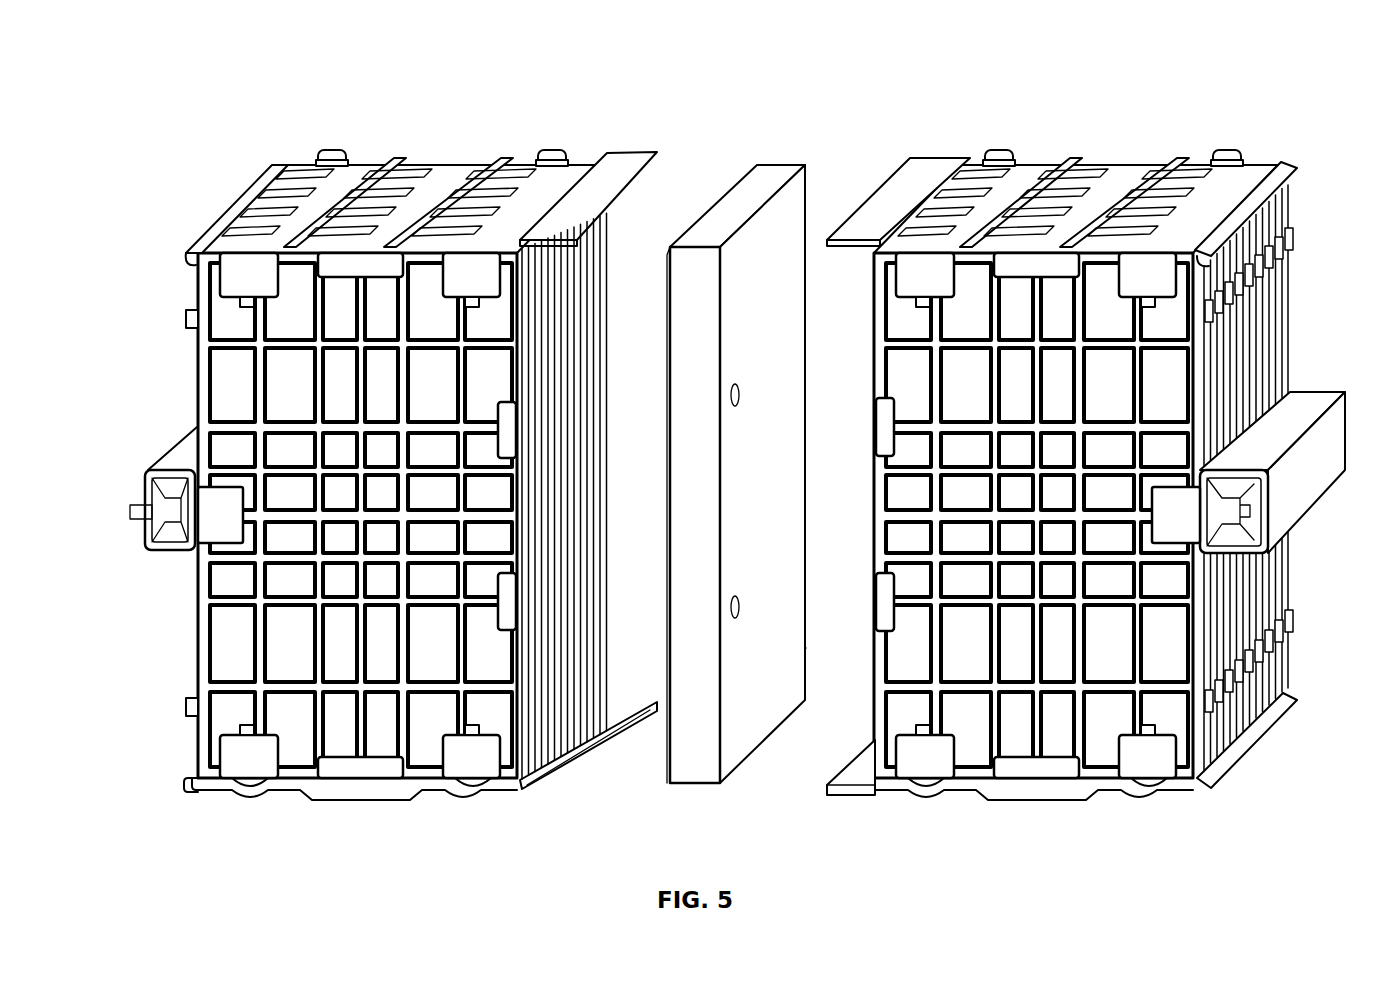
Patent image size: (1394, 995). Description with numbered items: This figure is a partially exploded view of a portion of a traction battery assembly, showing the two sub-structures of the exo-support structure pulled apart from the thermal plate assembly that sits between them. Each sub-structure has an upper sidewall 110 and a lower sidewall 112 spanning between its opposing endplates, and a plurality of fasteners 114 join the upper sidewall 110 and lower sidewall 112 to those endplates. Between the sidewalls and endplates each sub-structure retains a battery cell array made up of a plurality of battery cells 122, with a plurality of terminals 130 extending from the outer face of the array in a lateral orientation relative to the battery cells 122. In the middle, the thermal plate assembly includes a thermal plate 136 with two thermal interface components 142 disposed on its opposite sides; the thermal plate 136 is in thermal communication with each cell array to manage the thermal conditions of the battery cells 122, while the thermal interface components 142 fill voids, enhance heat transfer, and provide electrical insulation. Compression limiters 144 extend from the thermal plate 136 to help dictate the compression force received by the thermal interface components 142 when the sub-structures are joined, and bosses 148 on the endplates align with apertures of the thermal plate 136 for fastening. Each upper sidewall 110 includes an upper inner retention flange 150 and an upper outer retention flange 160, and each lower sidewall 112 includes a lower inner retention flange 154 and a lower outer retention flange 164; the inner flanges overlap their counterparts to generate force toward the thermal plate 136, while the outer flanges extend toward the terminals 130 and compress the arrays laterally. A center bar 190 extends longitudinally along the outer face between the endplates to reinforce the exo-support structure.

The upper sidewall 110 is at (448, 168).
The lower sidewall 112 is at (368, 800).
The fastener 114 is at (330, 152).
The battery cell 122 is at (590, 357).
The terminal 130 is at (188, 318).
The thermal plate 136 is at (692, 770).
The thermal interface component 142 is at (668, 455).
The compression limiter 144 is at (668, 265).
The boss 148 is at (512, 432).
The upper inner retention flange 150 is at (620, 165).
The lower inner retention flange 154 is at (558, 780).
The upper outer retention flange 160 is at (195, 262).
The lower outer retention flange 164 is at (195, 775).
The center bar 190 is at (150, 470).